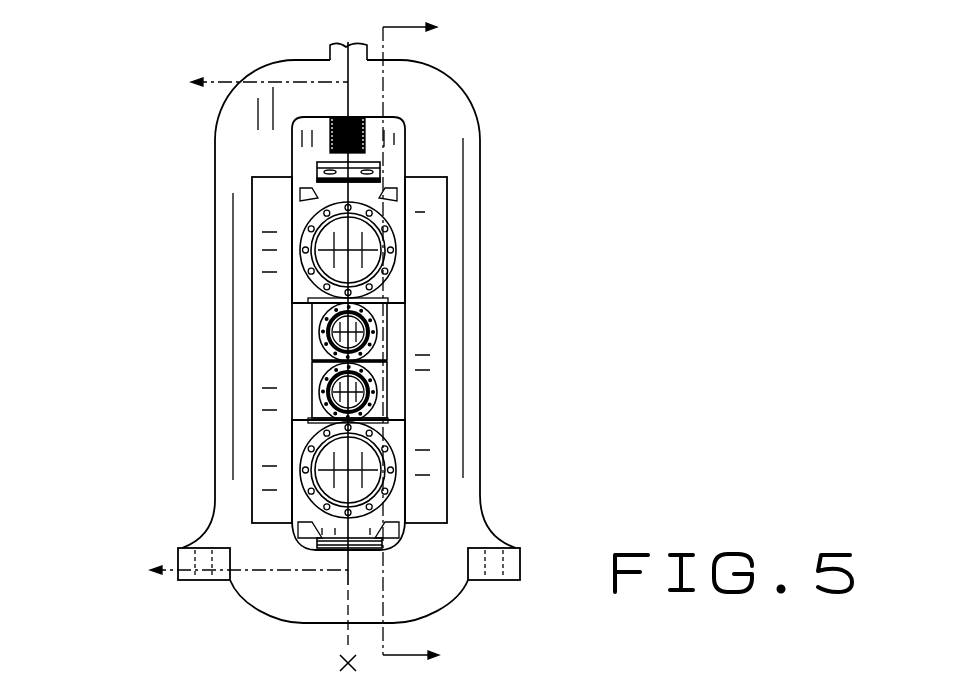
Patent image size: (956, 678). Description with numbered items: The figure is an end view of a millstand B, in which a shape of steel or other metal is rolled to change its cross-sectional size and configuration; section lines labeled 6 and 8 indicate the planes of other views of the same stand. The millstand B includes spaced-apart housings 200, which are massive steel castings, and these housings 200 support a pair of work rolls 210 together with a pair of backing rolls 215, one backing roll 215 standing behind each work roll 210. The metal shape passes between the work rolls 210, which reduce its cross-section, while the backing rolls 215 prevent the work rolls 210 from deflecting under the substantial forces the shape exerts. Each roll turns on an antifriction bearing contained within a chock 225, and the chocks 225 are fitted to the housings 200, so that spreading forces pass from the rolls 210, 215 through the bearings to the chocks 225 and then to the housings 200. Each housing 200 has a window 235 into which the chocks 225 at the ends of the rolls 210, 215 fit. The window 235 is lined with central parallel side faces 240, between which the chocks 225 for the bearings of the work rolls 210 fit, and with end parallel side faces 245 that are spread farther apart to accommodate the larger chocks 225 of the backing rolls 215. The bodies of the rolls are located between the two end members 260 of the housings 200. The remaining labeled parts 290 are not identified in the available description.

The housing 200 is at (420, 65).
The end member 260 is at (292, 70).
The window 235 is at (403, 138).
The end parallel side face 245 is at (302, 165).
The backing roll 215 is at (365, 236).
The side support block 290 is at (293, 210).
The work roll 210 is at (386, 322).
The central parallel side face 240 is at (313, 350).
The chock 225 is at (310, 310).
The section line 6 is at (232, 327).
The section line 8 is at (423, 345).
The millstand B is at (572, 87).